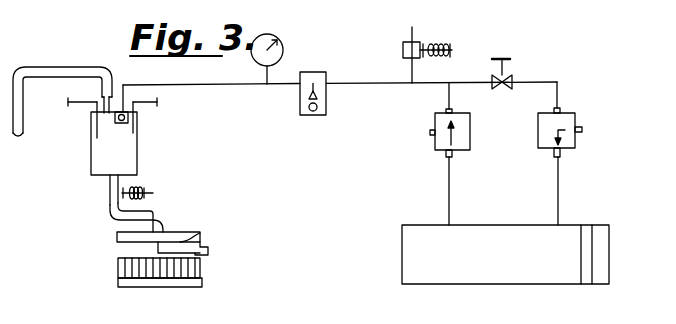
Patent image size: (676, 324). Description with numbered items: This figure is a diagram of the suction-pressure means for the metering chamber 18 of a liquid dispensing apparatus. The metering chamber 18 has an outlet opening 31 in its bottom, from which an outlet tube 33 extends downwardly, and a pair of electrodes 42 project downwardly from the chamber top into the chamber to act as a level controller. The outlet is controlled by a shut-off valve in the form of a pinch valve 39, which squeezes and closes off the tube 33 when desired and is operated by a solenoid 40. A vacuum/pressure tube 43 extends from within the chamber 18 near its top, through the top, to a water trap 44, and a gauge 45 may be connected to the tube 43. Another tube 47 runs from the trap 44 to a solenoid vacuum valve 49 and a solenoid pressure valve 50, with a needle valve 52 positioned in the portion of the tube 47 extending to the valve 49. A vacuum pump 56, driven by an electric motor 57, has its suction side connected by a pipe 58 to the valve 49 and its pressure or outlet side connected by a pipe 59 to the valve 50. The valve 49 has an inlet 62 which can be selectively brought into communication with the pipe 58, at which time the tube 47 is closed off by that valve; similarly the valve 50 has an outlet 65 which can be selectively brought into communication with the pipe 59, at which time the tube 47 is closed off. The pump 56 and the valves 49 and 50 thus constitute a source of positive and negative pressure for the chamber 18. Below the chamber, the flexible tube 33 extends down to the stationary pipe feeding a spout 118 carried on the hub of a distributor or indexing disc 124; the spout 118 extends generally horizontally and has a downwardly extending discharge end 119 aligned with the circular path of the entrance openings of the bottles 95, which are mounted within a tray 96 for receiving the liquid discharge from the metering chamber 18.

The outlet opening 31 is at (68, 67).
The metering chamber 18 is at (100, 150).
The electrodes 42 is at (97, 126).
The solenoid 40 is at (139, 184).
The pinch valve 39 is at (108, 194).
The outlet tube 33 is at (147, 212).
The indexing disc 124 is at (185, 233).
The spout 118 is at (200, 237).
The discharge end 119 is at (204, 253).
The bottles 95 is at (118, 268).
The tray 96 is at (172, 283).
The vacuum/pressure tube 43 is at (202, 84).
The gauge 45 is at (282, 50).
The water trap 44 is at (326, 100).
The tube 47 is at (373, 83).
The needle valve 52 is at (512, 67).
The solenoid pressure valve 50 is at (470, 135).
The outlet 65 is at (430, 128).
The solenoid vacuum valve 49 is at (577, 140).
The inlet 62 is at (580, 127).
The pipe 59 is at (449, 185).
The pipe 58 is at (558, 190).
The vacuum pump 56 is at (502, 277).
The electric motor 57 is at (602, 248).